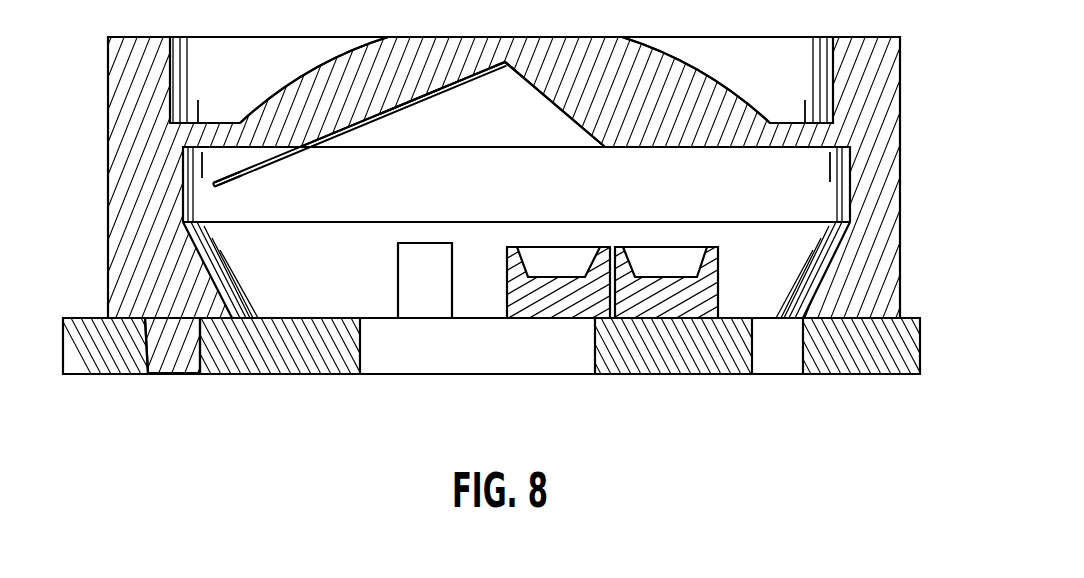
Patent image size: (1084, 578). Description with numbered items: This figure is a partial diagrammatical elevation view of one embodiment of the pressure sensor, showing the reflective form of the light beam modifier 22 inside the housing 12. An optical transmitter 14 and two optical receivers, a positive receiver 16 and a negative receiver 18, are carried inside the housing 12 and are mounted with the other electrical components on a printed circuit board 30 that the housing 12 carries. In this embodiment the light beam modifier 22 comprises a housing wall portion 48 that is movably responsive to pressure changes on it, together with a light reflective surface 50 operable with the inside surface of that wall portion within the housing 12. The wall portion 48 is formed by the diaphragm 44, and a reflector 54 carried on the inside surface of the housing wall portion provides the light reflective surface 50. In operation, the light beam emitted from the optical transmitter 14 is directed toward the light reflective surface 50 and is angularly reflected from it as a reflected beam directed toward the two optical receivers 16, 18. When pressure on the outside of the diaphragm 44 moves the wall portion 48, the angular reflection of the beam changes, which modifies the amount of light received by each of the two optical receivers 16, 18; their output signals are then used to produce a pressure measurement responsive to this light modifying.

The housing 12 is at (868, 97).
The optical transmitter 14 is at (433, 303).
The positive receiver 16 is at (542, 303).
The negative receiver 18 is at (652, 303).
The light beam modifier 22 is at (375, 108).
The printed circuit board 30 is at (873, 337).
The diaphragm 44 is at (626, 67).
The housing wall portion 48 is at (507, 60).
The light reflective surface 50 is at (400, 115).
The reflector 54 is at (217, 186).